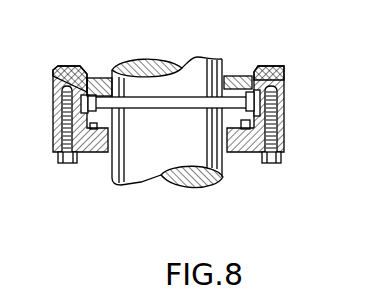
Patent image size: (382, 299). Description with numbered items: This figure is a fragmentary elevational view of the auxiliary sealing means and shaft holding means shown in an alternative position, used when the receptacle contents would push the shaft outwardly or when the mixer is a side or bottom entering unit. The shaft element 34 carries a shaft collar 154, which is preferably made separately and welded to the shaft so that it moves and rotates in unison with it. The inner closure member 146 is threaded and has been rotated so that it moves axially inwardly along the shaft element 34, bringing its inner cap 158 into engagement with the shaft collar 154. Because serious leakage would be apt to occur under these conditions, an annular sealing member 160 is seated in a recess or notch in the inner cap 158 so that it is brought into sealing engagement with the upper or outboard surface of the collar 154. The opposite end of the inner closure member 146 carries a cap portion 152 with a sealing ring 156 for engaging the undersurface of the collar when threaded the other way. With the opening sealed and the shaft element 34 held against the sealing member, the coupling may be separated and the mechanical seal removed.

The shaft element 34 is at (192, 178).
The inner closure member 146 is at (284, 68).
The cap portion 152 is at (240, 153).
The shaft collar 154 is at (162, 103).
The sealing member or ring 156 is at (93, 153).
The inner cap 158 is at (233, 84).
The sealing member 160 is at (95, 94).